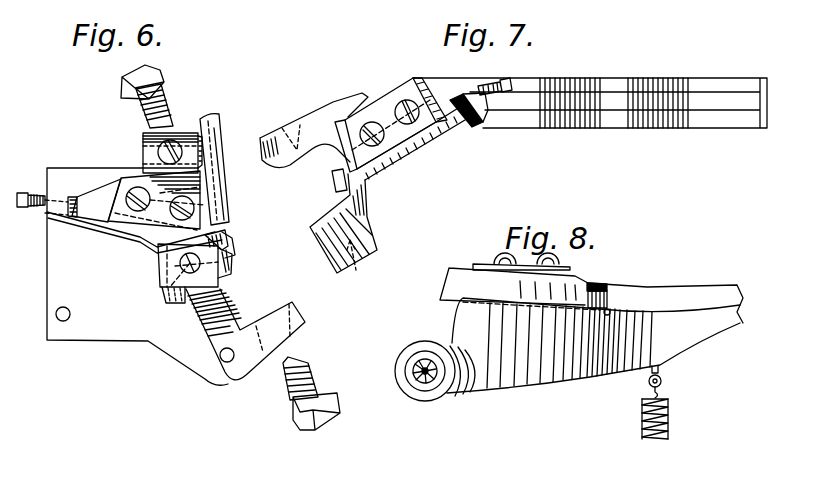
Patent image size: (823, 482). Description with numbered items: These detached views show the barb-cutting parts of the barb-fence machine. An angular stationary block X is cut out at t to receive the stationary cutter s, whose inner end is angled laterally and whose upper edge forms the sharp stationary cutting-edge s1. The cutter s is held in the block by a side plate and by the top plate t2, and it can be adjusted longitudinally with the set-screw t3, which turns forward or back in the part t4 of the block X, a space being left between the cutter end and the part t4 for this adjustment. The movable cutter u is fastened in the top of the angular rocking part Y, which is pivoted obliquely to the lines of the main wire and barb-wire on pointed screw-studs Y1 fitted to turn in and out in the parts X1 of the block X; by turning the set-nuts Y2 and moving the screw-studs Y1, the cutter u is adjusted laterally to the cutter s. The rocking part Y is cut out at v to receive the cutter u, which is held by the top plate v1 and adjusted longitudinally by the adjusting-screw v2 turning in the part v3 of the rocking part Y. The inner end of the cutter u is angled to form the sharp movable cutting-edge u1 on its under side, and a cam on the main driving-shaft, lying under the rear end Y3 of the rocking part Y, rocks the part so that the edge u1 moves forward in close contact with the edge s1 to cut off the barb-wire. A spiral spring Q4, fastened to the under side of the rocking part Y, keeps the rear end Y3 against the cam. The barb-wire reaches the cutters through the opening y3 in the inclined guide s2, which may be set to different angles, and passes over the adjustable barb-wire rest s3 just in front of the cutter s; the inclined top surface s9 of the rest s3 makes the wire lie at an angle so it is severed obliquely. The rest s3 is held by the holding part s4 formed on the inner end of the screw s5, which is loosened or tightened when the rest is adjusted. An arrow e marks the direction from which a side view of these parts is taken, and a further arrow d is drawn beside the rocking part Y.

In FIG. 6, the stationary block X is at (70, 151).
In FIG. 6, the parts of stationary block X1 is at (305, 325).
In FIG. 7, the rocking part Y is at (388, 60).
In FIG. 8, the rocking part Y is at (625, 267).
In FIG. 6, the pointed screw-studs Y1 is at (120, 90).
In FIG. 6, the set-nuts Y2 is at (318, 380).
In FIG. 7, the rear end of rocking part Y3 is at (680, 58).
In FIG. 6, the opening in inclined guide y3 is at (222, 126).
In FIG. 6, the stationary cutter s is at (96, 200).
In FIG. 6, the stationary cutting-edge s1 is at (137, 233).
In FIG. 6, the guide s2 is at (224, 181).
In FIG. 6, the adjustable barb-wire rest s3 is at (224, 238).
In FIG. 6, the holding part s4 is at (249, 264).
In FIG. 6, the screw s5 is at (176, 303).
In FIG. 6, the inclined top surface s9 is at (230, 268).
In FIG. 6, the cut-out t is at (77, 200).
In FIG. 6, the top plate t2 is at (175, 212).
In FIG. 6, the set-screw t3 is at (31, 184).
In FIG. 6, the part of block t4 is at (52, 213).
In FIG. 6, the arrow e is at (253, 233).
In FIG. 7, the movable cutter u is at (372, 178).
In FIG. 8, the movable cutter u is at (482, 291).
In FIG. 7, the movable cutting-edge u1 is at (328, 186).
In FIG. 8, the movable cutting-edge u1 is at (446, 298).
In FIG. 7, the cut-out in rocking part v is at (472, 126).
In FIG. 8, the cut-out in rocking part v is at (593, 288).
In FIG. 7, the top plate v1 is at (389, 119).
In FIG. 8, the top plate v1 is at (488, 270).
In FIG. 7, the adjusting-screw v2 is at (510, 82).
In FIG. 8, the adjusting-screw v2 is at (609, 314).
In FIG. 7, the part of rocking part v3 is at (477, 92).
In FIG. 7, the direction arrow d is at (459, 236).
In FIG. 8, the spiral spring Q4 is at (669, 402).